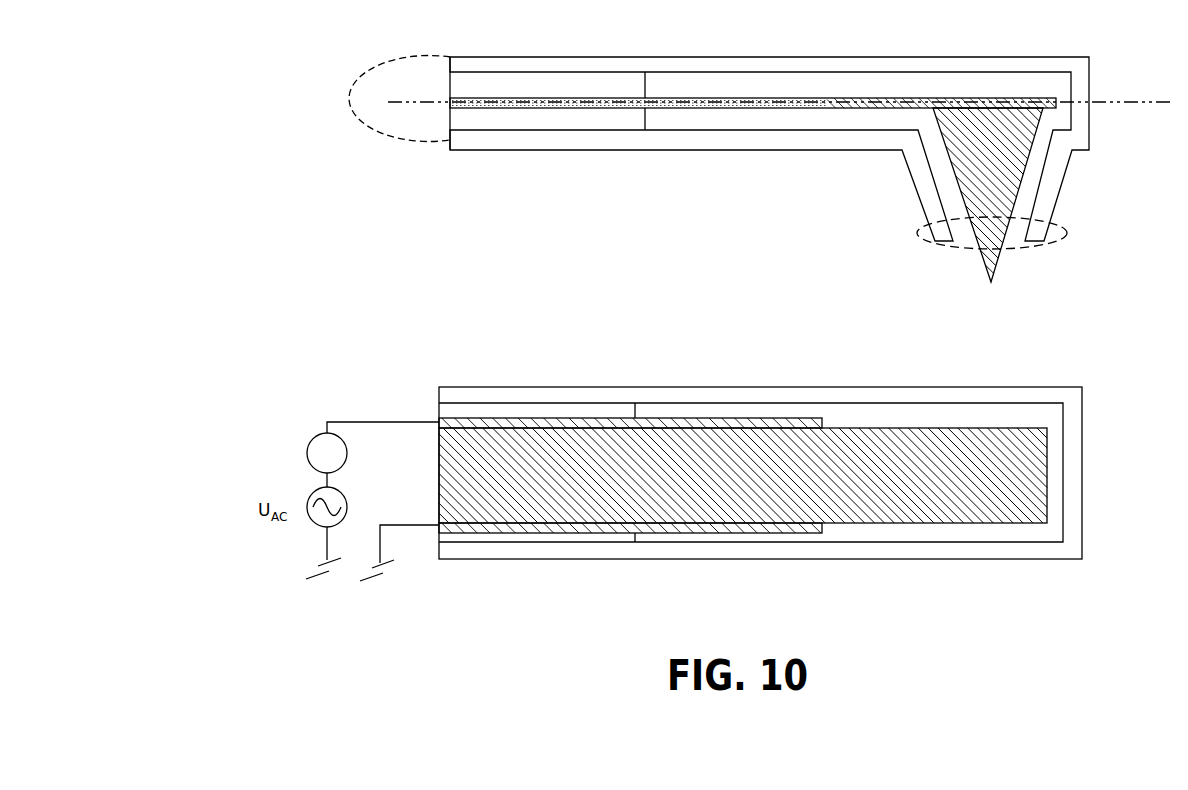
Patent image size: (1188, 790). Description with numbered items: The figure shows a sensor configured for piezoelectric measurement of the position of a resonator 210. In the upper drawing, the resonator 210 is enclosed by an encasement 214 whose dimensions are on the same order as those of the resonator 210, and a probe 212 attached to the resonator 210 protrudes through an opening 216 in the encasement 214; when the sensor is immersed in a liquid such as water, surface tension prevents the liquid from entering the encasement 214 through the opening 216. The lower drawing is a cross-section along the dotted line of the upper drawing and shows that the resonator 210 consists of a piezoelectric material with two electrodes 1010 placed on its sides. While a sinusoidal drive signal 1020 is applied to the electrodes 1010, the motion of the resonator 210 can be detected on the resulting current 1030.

The encasement 214 is at (394, 98).
The resonator 210 is at (840, 104).
The probe 212 is at (1032, 155).
The opening 216 is at (1020, 248).
The electrodes 1010 is at (465, 427).
The sinusoidal drive signal 1020 is at (343, 492).
The resulting current 1030 is at (307, 446).